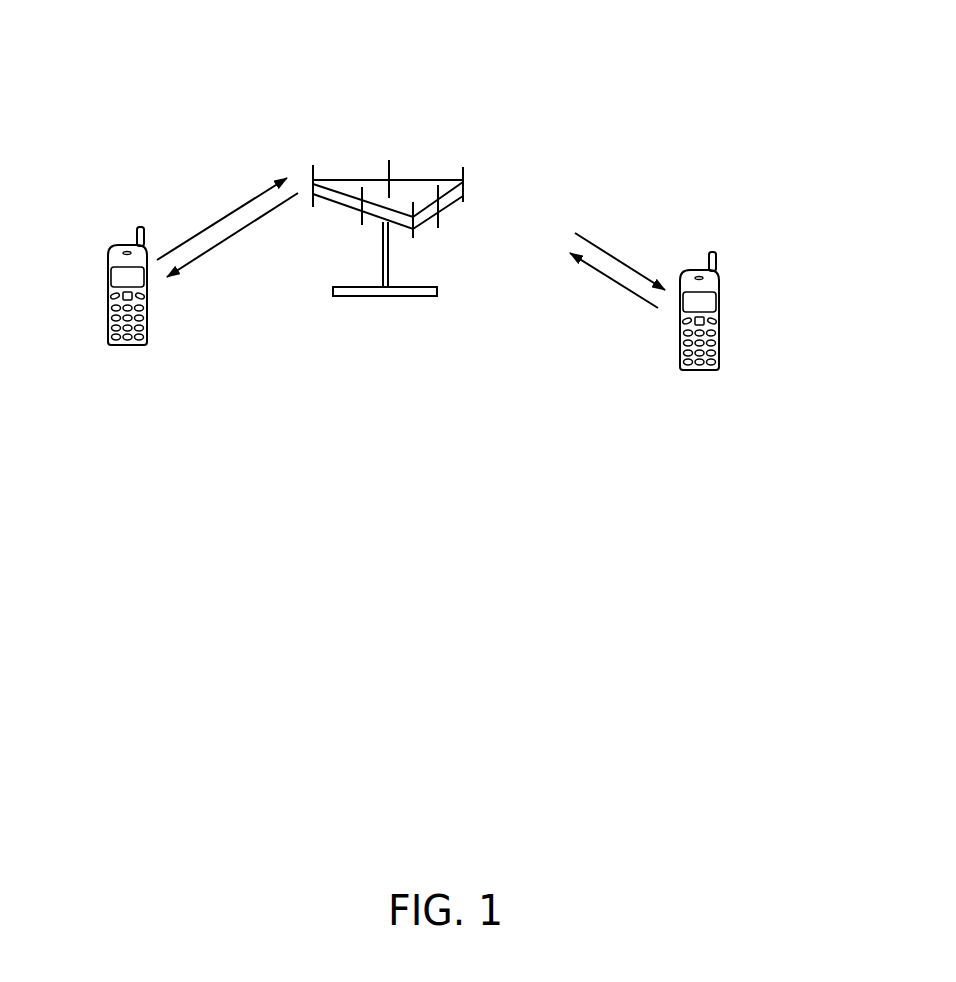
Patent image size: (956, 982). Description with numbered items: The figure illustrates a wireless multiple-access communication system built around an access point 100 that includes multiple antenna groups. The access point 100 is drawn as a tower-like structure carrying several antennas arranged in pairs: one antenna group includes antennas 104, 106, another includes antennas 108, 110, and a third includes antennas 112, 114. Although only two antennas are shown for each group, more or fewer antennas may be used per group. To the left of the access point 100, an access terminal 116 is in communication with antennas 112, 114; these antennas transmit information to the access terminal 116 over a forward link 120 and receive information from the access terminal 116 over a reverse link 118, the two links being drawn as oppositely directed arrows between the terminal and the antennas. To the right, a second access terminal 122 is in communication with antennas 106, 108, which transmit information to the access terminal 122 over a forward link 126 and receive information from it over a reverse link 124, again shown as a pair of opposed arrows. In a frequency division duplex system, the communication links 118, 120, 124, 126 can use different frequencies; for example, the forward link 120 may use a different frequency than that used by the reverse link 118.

The access point 100 is at (652, 71).
The antenna 104 is at (413, 238).
The antenna 106 is at (441, 218).
The antenna 108 is at (467, 195).
The antenna 110 is at (389, 165).
The antenna 112 is at (308, 165).
The antenna 114 is at (355, 225).
The access terminal 116 is at (107, 277).
The reverse link 118 is at (231, 210).
The forward link 120 is at (215, 246).
The access terminal 122 is at (720, 300).
The reverse link 124 is at (620, 290).
The forward link 126 is at (617, 258).